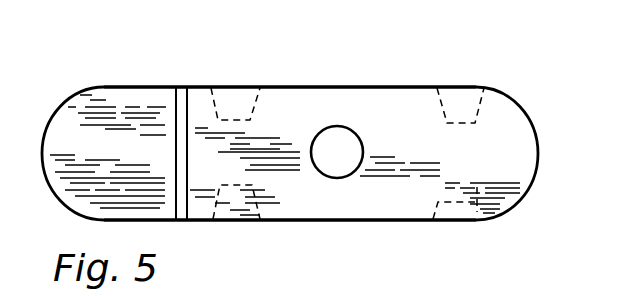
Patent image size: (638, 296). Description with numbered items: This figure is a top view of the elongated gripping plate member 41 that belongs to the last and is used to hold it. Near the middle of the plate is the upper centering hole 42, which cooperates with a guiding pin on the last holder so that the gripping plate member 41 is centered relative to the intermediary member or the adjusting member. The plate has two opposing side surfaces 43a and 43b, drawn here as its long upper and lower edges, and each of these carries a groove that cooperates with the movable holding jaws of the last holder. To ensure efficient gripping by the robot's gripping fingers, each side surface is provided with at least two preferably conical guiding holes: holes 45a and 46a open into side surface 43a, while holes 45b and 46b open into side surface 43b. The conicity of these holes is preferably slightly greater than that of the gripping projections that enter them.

The gripping plate member 41 is at (297, 108).
The upper centering hole 42 is at (344, 128).
The side surface 43a is at (407, 88).
The side surface 43b is at (338, 220).
The conical guiding hole 45a is at (218, 103).
The conical guiding hole 45b is at (220, 190).
The conical guiding hole 46a is at (473, 100).
The conical guiding hole 46b is at (440, 203).